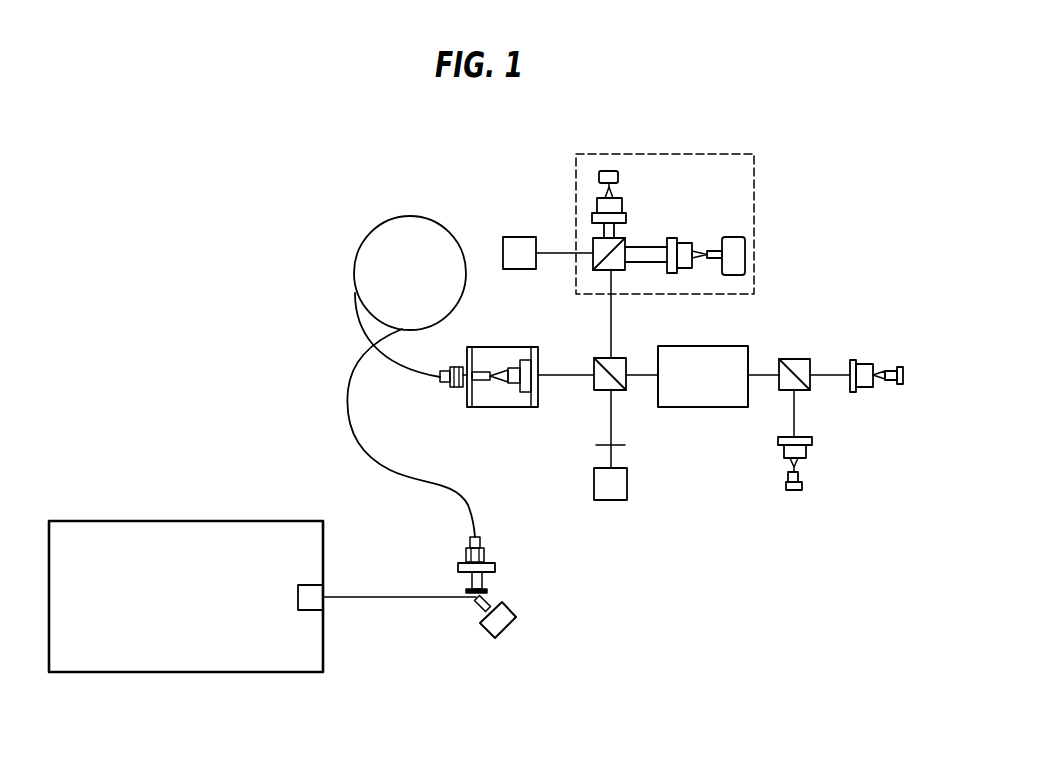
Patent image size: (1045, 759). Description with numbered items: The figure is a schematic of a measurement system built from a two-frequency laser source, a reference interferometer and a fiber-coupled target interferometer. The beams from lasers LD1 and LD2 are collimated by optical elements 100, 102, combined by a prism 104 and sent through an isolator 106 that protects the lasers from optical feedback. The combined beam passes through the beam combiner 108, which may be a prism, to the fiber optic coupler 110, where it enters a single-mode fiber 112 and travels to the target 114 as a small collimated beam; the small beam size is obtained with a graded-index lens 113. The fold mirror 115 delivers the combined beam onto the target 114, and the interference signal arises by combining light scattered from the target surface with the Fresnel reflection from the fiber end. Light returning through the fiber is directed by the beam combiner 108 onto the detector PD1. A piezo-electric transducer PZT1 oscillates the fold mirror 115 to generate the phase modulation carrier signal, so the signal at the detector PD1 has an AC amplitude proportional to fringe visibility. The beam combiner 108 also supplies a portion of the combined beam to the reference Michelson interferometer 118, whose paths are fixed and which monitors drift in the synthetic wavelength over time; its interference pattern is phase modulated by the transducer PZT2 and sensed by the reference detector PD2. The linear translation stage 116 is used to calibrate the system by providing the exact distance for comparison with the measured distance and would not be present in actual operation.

The optical element 100 is at (821, 462).
The optical element 102 is at (888, 380).
The prism 104 is at (783, 359).
The isolator 106 is at (688, 345).
The beam combiner 108 is at (613, 356).
The fiber optic coupler 110 is at (498, 346).
The single-mode fiber 112 is at (355, 258).
The graded-index (GRIN) lens 113 is at (463, 585).
The target 114 is at (328, 600).
The fold mirror 115 is at (489, 604).
The linear translation stage 116 is at (242, 520).
The reference Michelson interferometer 118 is at (645, 238).
The detector PD1 is at (611, 500).
The reference detector PD2 is at (519, 239).
The laser LD1 is at (805, 485).
The laser LD2 is at (898, 385).
The piezo-electric transducer PZT1 is at (521, 599).
The transducer PZT2 is at (707, 249).